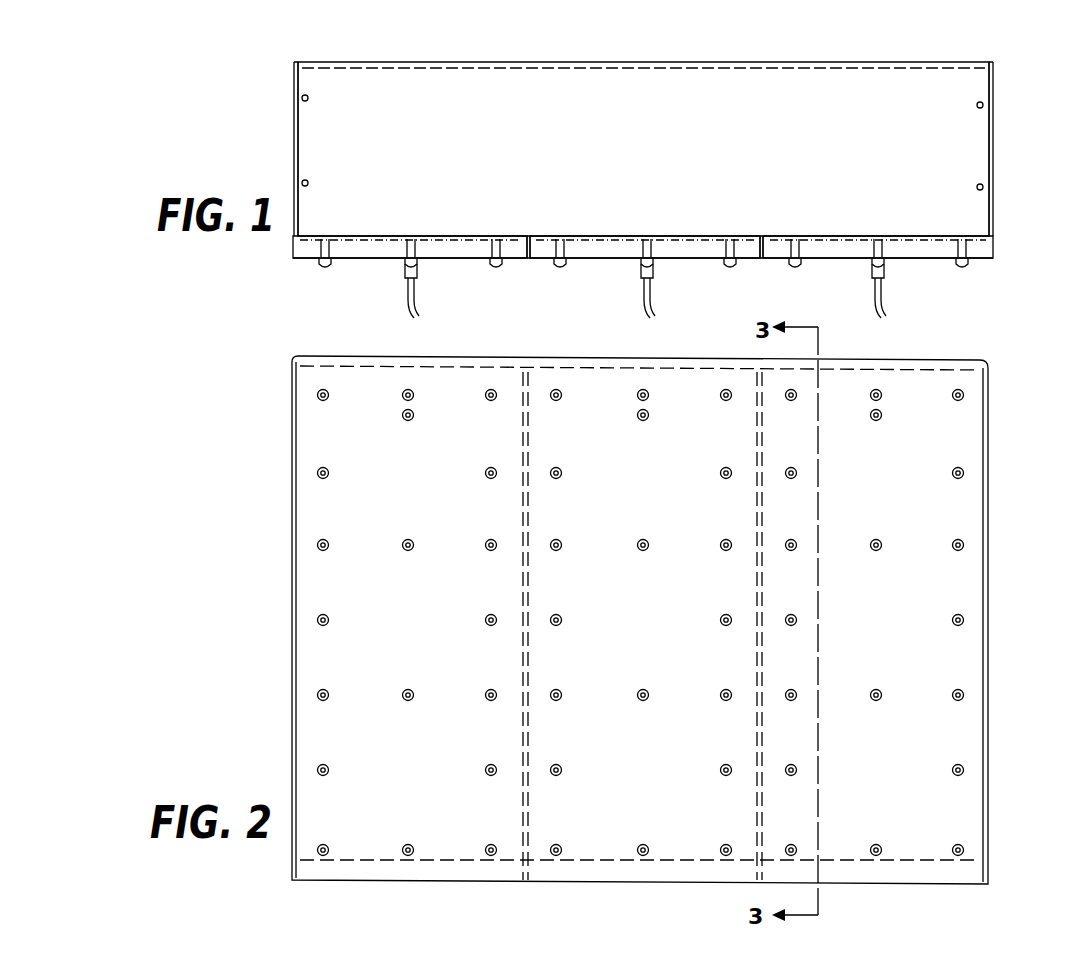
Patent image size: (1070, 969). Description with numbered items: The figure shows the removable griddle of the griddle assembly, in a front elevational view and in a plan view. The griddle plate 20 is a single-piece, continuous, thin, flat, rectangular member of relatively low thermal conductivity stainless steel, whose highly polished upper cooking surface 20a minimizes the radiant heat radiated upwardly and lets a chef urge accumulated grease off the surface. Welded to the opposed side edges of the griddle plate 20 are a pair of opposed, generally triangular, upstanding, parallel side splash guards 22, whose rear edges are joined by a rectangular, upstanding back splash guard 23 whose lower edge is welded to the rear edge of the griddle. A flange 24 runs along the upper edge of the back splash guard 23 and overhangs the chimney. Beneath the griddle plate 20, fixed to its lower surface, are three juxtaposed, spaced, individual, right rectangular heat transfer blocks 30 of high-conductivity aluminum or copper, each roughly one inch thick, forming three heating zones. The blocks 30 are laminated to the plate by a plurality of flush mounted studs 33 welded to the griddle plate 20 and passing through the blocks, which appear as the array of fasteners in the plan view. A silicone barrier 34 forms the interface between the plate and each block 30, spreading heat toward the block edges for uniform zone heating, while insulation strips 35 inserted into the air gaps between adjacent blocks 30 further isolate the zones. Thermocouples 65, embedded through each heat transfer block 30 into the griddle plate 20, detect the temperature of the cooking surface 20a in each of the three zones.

In FIG. 1, the griddle plate 20 is at (862, 237).
In FIG. 2, the griddle plate 20 is at (848, 400).
In FIG. 1, the upper cooking surface 20a is at (441, 236).
In FIG. 2, the upper cooking surface 20a is at (934, 400).
In FIG. 1, the side splash guards 22 is at (293, 110).
In FIG. 2, the side splash guards 22 is at (292, 503).
In FIG. 1, the back splash guard 23 is at (651, 100).
In FIG. 2, the back splash guard 23 is at (576, 378).
In FIG. 1, the flange 24 is at (893, 63).
In FIG. 2, the flange 24 is at (670, 359).
In FIG. 1, the heat transfer blocks 30 is at (376, 250).
In FIG. 1, the flush mounted studs 33 is at (326, 252).
In FIG. 2, the flush mounted studs 33 is at (408, 538).
In FIG. 1, the silicone barrier 34 is at (998, 243).
In FIG. 1, the insulation strips 35 is at (530, 252).
In FIG. 1, the thermocouples 65 is at (415, 296).